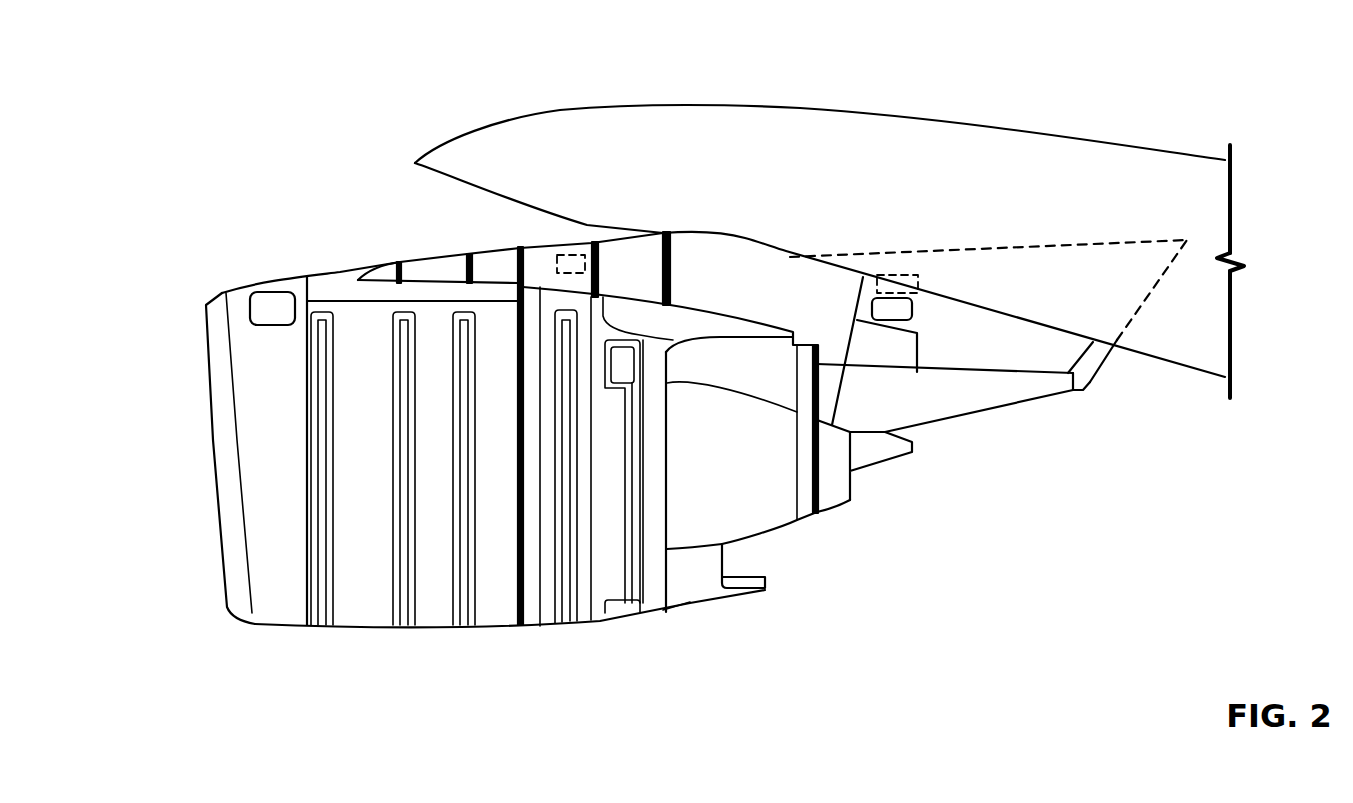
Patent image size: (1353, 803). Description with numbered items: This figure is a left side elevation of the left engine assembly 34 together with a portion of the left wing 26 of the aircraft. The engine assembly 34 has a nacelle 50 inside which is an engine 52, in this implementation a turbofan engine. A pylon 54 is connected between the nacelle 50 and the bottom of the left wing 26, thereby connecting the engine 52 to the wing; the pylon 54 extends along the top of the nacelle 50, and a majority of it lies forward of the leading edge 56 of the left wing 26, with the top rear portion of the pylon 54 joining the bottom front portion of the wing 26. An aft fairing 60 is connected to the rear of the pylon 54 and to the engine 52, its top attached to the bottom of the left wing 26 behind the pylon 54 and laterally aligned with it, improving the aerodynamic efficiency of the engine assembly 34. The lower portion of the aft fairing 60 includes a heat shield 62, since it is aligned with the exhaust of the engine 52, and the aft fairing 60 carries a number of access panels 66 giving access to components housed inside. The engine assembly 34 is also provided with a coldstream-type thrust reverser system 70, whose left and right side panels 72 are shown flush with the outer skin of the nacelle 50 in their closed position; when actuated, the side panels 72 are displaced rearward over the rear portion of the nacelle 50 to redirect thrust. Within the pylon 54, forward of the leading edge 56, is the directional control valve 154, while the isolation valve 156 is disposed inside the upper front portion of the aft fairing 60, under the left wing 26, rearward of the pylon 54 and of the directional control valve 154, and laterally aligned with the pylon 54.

The left wing 26 is at (714, 178).
The left engine assembly 34 is at (688, 643).
The nacelle 50 is at (378, 584).
The engine 52 is at (777, 530).
The pylon 54 is at (450, 263).
The leading edge 56 is at (1140, 352).
The aft fairing 60 is at (1033, 352).
The heat shield 62 is at (980, 392).
The access panels 66 is at (902, 310).
The thrust reverser system 70 is at (590, 643).
The side panels 72 is at (525, 584).
The directional control valve 154 is at (568, 262).
The isolation valve 156 is at (905, 281).